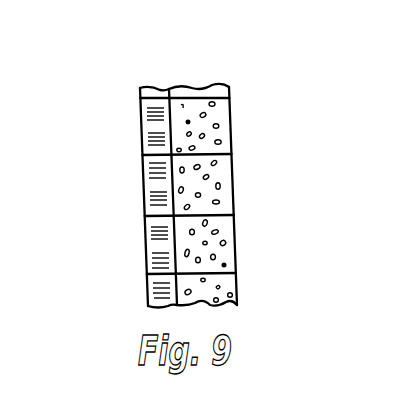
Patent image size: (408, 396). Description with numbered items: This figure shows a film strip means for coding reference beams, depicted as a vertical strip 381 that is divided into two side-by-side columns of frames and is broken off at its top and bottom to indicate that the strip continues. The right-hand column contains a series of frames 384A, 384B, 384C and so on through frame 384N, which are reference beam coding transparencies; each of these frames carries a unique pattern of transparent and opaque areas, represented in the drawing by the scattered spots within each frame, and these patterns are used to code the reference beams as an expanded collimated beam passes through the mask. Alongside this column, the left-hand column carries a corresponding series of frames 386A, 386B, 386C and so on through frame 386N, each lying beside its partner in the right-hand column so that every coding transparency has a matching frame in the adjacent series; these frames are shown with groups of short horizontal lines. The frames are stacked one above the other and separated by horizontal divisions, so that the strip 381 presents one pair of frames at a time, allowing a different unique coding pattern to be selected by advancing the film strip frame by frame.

The multi-section filter column 381 is at (207, 78).
The frame 384A is at (231, 115).
The frame 384B is at (233, 190).
The frame 384C is at (237, 250).
The frame 384N is at (238, 298).
The frame 386A is at (141, 129).
The frame 386B is at (144, 190).
The frame 386C is at (146, 243).
The frame 386N is at (147, 295).